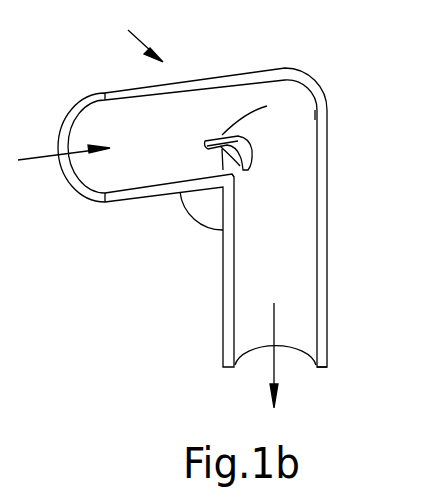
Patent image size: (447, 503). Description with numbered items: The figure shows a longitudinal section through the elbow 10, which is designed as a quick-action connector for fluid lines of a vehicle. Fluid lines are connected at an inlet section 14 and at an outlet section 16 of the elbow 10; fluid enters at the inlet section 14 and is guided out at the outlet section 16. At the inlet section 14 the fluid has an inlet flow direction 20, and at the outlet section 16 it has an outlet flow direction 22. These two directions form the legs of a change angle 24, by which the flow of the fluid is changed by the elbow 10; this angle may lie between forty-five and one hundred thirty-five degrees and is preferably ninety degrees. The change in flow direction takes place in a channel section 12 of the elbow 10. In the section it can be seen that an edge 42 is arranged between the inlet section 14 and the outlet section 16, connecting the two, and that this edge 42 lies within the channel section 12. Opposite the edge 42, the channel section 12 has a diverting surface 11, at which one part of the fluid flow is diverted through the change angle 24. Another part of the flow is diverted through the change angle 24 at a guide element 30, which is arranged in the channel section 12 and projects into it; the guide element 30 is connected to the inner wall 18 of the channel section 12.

The elbow 10 is at (130, 33).
The diverting surface 11 is at (305, 113).
The channel section 12 is at (288, 70).
The inlet section 14 is at (125, 200).
The outlet section 16 is at (327, 318).
The inner wall 18 is at (215, 107).
The inlet flow direction 20 is at (40, 162).
The outlet flow direction 22 is at (278, 363).
The change angle 24 is at (202, 205).
The guide element 30 is at (258, 163).
The edge 42 is at (222, 167).